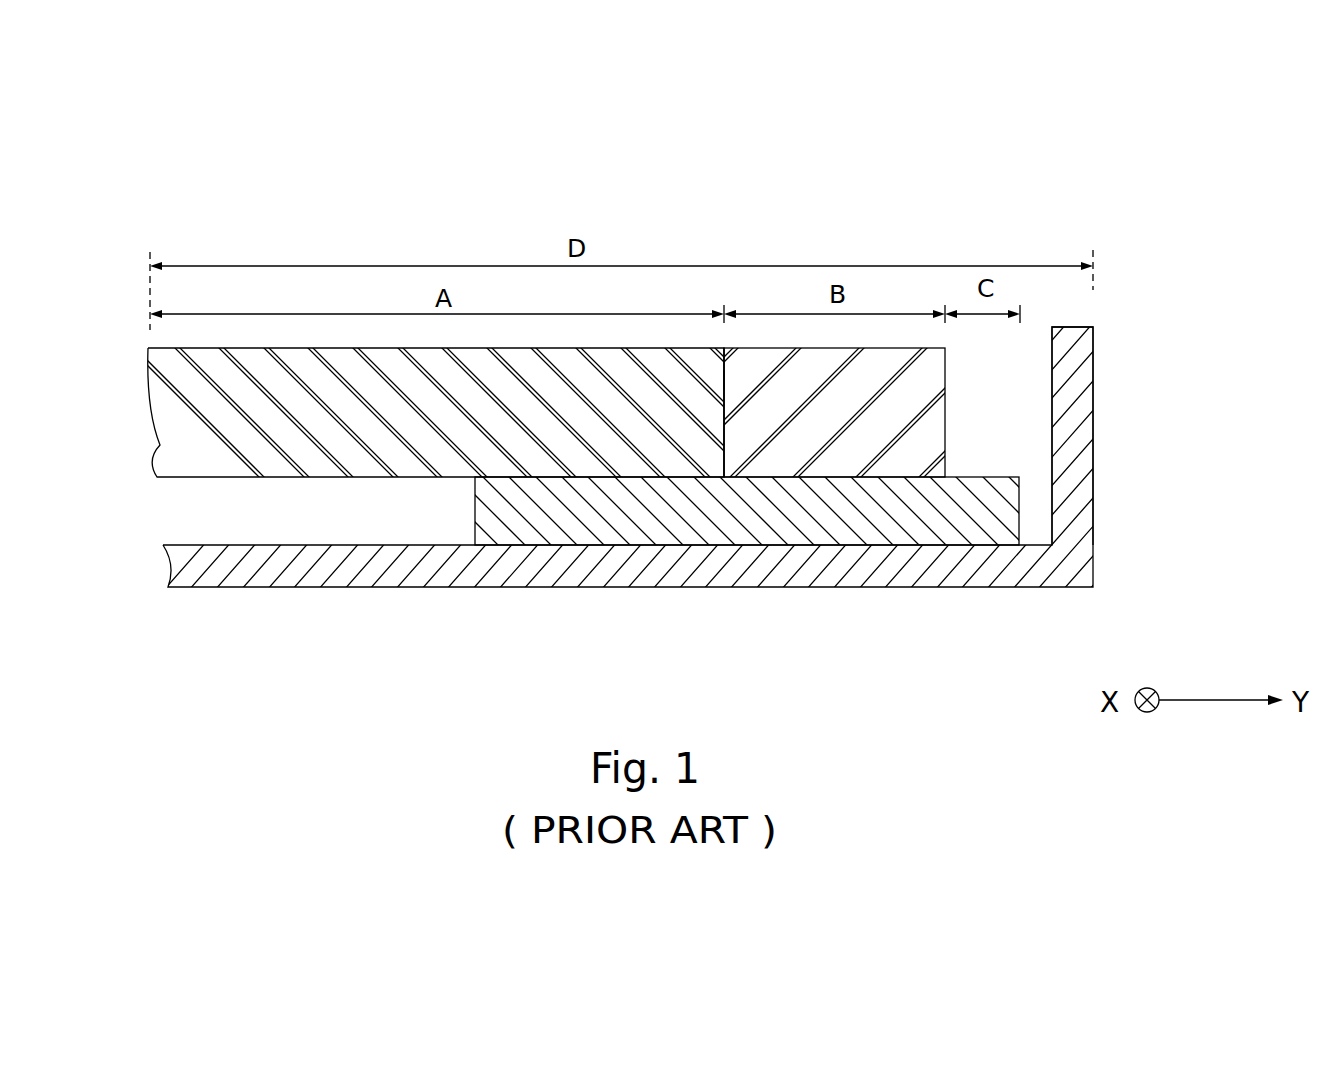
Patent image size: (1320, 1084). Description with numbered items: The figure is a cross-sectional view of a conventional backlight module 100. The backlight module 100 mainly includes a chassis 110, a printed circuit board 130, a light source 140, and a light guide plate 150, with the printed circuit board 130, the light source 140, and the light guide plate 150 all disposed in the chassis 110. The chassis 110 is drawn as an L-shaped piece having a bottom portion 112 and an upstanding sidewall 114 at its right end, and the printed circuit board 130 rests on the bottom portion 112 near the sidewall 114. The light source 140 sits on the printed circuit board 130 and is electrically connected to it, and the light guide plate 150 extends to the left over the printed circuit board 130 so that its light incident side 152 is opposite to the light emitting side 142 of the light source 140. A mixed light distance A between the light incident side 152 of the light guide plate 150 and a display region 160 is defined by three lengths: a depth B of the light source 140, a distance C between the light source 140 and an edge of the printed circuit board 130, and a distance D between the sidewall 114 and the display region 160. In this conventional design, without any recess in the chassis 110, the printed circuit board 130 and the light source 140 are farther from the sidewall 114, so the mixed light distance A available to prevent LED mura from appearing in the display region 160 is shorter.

The backlight module 100 is at (120, 77).
The chassis 110 is at (734, 452).
The bottom plate of chassis 112 is at (1082, 567).
The sidewall 114 is at (1127, 436).
The printed circuit board 130 is at (840, 513).
The light source 140 is at (887, 365).
The light emitting side 142 is at (731, 374).
The light guide plate 150 is at (348, 368).
The light incident side 152 is at (716, 358).
The display region 160 is at (150, 258).